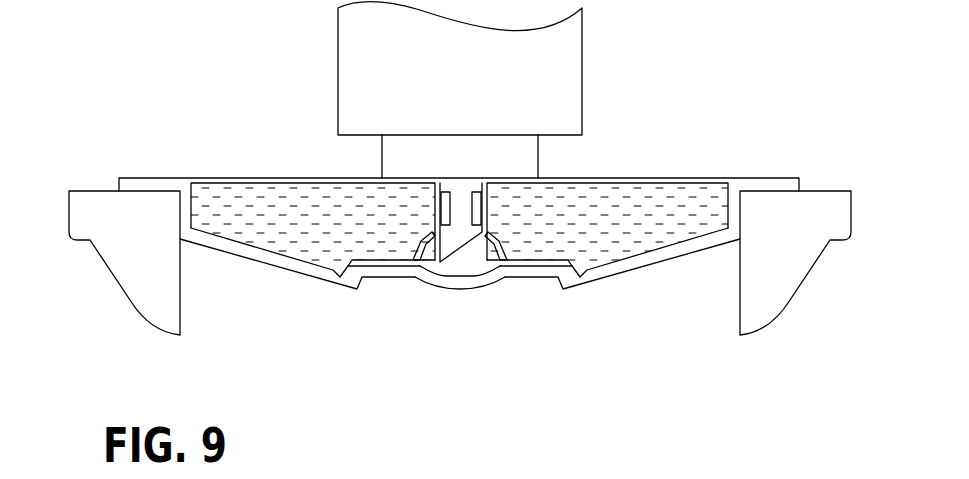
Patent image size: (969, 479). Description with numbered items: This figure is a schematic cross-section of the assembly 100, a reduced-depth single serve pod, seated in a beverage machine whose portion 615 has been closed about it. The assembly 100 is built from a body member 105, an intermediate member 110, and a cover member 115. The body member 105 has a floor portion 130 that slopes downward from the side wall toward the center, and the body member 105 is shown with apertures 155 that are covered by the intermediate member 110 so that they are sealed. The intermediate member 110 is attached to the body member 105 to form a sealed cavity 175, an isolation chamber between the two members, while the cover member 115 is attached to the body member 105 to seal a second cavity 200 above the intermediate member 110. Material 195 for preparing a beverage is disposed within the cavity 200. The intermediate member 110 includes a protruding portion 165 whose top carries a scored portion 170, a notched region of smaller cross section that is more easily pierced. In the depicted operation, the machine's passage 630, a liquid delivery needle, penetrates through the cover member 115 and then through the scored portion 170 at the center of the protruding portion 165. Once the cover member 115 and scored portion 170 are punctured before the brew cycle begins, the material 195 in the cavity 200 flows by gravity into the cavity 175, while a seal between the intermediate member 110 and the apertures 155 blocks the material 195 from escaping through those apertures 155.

The assembly 100 is at (212, 107).
The body member 105 is at (243, 265).
The intermediate member 110 is at (410, 247).
The cover member 115 is at (660, 178).
The floor portion 130 is at (328, 272).
The apertures 155 is at (385, 262).
The protruding portion 165 is at (500, 237).
The scored portion 170 is at (487, 228).
The cavity 175 is at (462, 265).
The material 195 is at (695, 197).
The cavity 200 is at (705, 218).
The portion 615 is at (140, 325).
The passage 630 is at (415, 207).